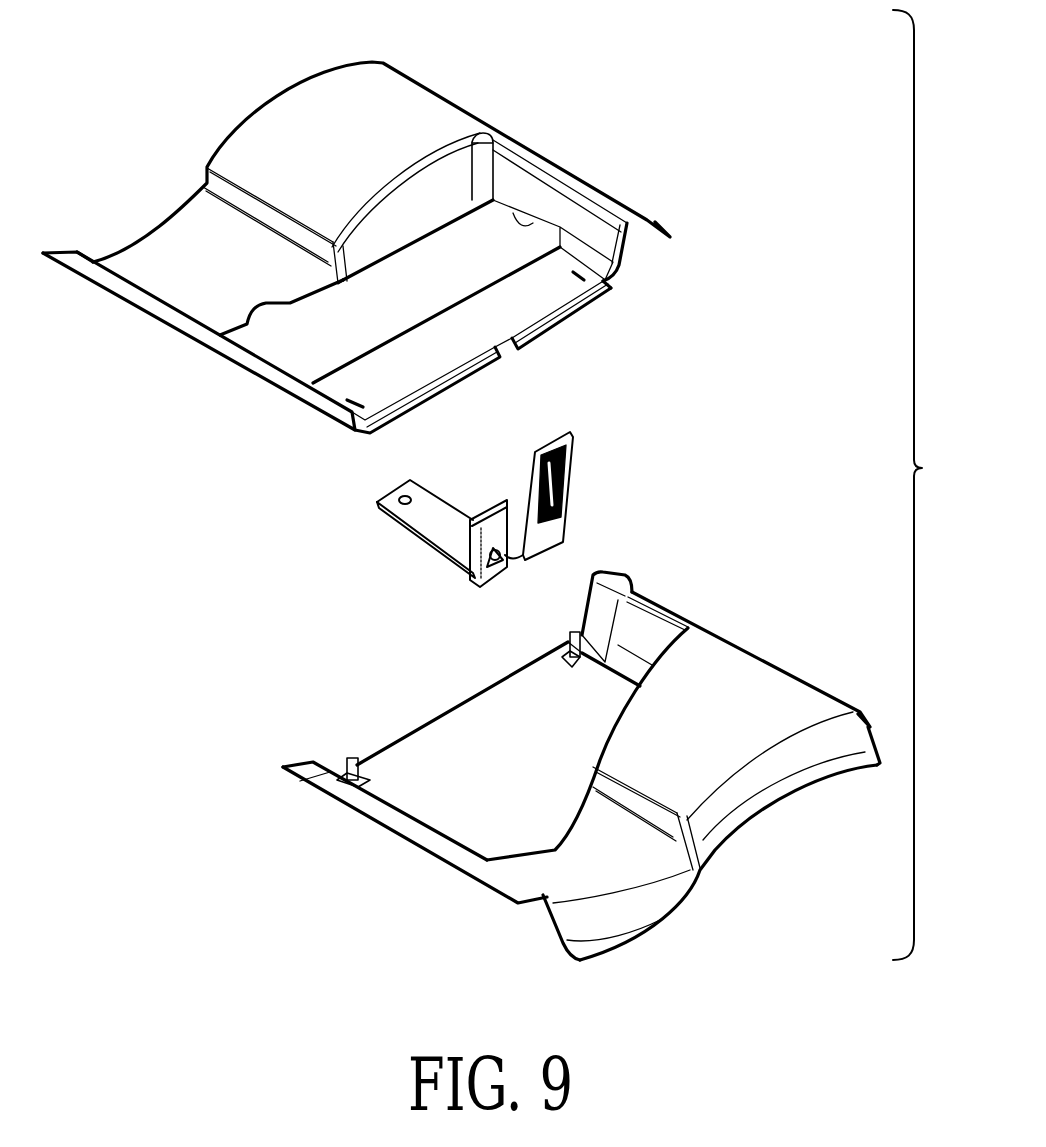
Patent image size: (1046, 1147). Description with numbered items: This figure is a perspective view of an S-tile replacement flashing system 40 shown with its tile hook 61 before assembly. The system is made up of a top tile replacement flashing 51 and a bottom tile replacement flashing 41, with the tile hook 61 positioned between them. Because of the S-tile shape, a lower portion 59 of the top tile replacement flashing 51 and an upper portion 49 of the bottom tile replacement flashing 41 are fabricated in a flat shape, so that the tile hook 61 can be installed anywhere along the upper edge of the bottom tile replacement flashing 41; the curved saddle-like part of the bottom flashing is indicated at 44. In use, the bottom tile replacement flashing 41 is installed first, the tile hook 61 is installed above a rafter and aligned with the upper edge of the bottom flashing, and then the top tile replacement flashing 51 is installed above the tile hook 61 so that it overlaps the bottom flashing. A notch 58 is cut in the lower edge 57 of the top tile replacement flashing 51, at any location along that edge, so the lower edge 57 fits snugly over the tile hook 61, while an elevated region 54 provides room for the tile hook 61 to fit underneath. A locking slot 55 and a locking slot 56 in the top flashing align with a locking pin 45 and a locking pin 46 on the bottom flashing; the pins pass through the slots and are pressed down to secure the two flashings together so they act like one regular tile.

The S-tile replacement flashing system 40 is at (927, 485).
The bottom tile replacement flashing 41 is at (581, 750).
The curved saddle portion 44 is at (730, 792).
The locking pin 45 is at (353, 758).
The locking pin 46 is at (567, 638).
The upper portion of bottom tile replacement flashing 49 is at (513, 710).
The top tile replacement flashing 51 is at (391, 242).
The elevated region 54 is at (404, 367).
The locking slot 55 is at (358, 404).
The locking slot 56 is at (580, 272).
The lower edge 57 is at (583, 313).
The notch 58 is at (494, 354).
The lower portion of top tile replacement flashing 59 is at (500, 240).
The tile hook 61 is at (567, 520).